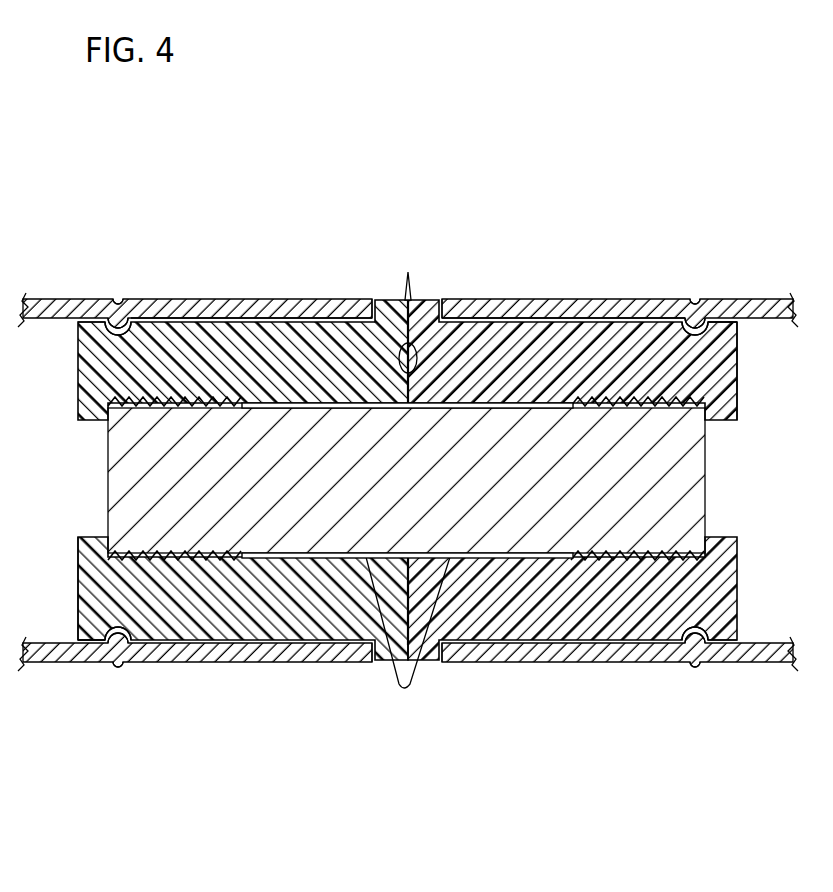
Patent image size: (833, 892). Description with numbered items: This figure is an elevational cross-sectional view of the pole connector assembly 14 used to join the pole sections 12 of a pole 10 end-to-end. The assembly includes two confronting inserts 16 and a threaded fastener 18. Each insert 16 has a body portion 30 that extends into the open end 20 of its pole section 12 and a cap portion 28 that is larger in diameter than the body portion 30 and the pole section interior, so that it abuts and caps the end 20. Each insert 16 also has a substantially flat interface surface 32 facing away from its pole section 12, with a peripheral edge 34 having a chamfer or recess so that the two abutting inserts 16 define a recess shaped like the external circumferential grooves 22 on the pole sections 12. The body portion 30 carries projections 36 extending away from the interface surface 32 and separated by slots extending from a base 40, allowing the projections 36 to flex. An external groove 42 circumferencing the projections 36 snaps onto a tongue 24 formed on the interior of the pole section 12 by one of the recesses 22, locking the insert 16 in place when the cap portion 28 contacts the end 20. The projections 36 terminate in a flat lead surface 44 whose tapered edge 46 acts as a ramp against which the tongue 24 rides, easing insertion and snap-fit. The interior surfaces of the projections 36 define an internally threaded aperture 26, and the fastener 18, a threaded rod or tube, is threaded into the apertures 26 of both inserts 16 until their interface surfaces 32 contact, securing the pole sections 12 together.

The pole 10 is at (602, 182).
The pole section 12 is at (78, 662).
The pole connector assembly 14 is at (398, 212).
The insert 16 is at (238, 635).
The fastener 18 is at (406, 480).
The end 20 is at (322, 298).
The recess or groove 22 is at (115, 300).
The tongue 24 is at (122, 322).
The aperture 26 is at (404, 690).
The cap portion 28 is at (383, 300).
The body portion 30 is at (118, 375).
The interface surface 32 is at (412, 357).
The peripheral edge 34 is at (380, 662).
The projection 36 is at (717, 323).
The base 40 is at (245, 312).
The external groove 42 is at (703, 337).
The lead surface 44 is at (737, 393).
The tapered edge 46 is at (78, 320).